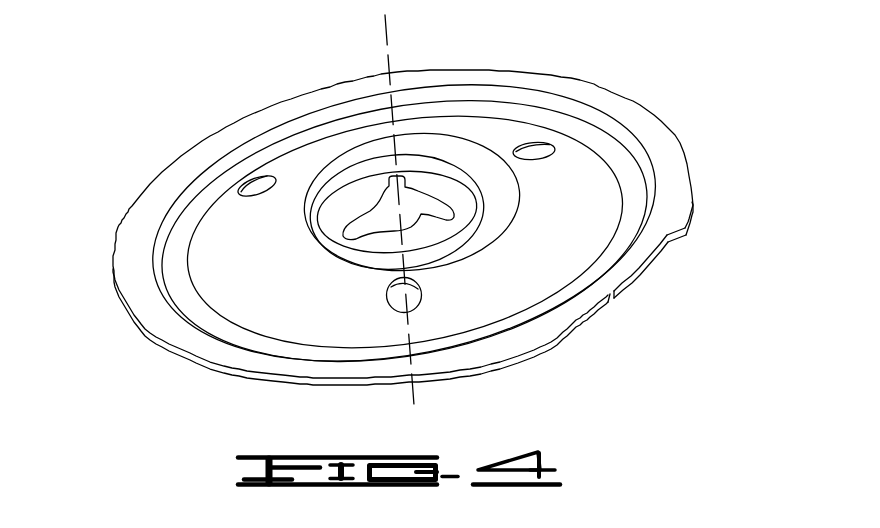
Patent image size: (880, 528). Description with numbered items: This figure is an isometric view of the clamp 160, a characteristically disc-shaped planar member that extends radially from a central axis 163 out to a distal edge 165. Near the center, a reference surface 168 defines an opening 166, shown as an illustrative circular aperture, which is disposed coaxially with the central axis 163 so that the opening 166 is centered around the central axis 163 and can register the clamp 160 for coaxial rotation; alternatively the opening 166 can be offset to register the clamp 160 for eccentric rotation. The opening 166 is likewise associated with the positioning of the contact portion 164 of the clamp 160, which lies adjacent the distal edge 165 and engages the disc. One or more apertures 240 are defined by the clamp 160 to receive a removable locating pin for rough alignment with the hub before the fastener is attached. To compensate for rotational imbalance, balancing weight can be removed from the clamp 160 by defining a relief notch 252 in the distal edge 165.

The clamp 160 is at (248, 248).
The central axis 163 is at (392, 57).
The contact portion 164 is at (607, 318).
The distal edge 165 is at (683, 163).
The opening 166 is at (385, 215).
The reference surface 168 is at (420, 225).
The apertures 240 is at (257, 180).
The relief notch 252 is at (655, 267).